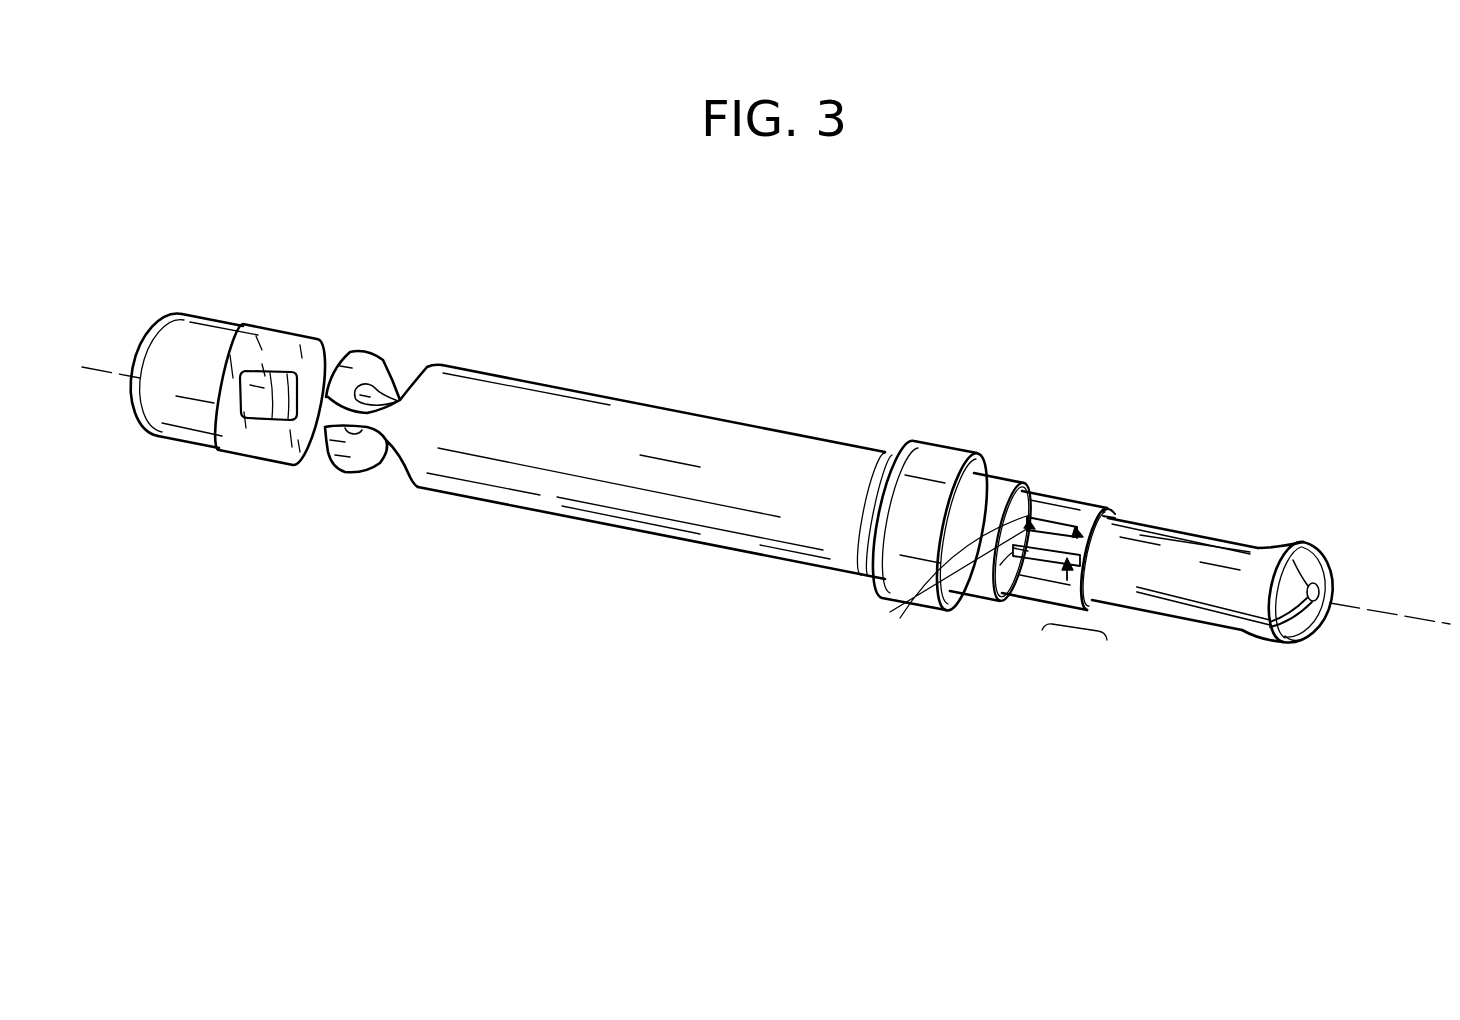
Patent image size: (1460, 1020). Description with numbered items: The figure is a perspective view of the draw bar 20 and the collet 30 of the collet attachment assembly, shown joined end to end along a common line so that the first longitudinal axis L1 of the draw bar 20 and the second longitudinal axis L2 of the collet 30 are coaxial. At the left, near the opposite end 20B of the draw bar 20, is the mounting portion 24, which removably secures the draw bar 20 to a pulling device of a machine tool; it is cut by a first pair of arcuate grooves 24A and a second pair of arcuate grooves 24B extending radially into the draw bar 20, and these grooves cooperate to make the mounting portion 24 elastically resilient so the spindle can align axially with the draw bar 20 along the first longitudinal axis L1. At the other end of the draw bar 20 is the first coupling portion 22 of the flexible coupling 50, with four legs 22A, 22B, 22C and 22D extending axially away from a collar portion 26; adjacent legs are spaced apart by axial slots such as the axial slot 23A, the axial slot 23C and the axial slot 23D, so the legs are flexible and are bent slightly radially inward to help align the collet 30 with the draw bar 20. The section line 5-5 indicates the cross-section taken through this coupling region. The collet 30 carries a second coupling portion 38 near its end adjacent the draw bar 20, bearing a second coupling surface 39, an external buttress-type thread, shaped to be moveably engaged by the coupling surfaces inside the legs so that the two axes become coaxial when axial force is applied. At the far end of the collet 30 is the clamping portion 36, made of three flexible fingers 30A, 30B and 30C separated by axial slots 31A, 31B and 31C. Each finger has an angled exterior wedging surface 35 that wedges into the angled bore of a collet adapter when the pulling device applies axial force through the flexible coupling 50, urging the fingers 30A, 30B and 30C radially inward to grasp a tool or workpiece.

The draw bar 20 is at (555, 400).
The opposite end of the draw bar 20B is at (150, 312).
The first longitudinal axis L1 is at (122, 383).
The mounting portion 24 is at (456, 352).
The first pair of arcuate grooves 24A is at (258, 440).
The second pair of arcuate grooves 24B is at (408, 367).
The collar portion 26 is at (993, 493).
The first coupling portion 22 is at (1054, 448).
The leg 22A is at (1067, 490).
The leg 22B is at (1108, 517).
The leg 22C is at (1100, 597).
The leg 22D is at (1050, 582).
The axial slot 23A is at (1095, 510).
The axial slot 23C is at (1095, 600).
The axial slot 23D is at (1048, 515).
The second coupling portion 38 is at (1070, 578).
The second coupling surface 39 is at (1013, 552).
The flexible coupling 50 is at (1071, 643).
The section line 5-5 is at (940, 574).
The collet 30 is at (1198, 638).
The flexible finger 30A is at (1300, 650).
The flexible finger 30B is at (1325, 565).
The flexible finger 30C is at (1297, 562).
The axial slot 31A is at (1320, 594).
The axial slot 31B is at (1300, 565).
The axial slot 31C is at (1182, 590).
The angled exterior wedging surface 35 is at (1263, 560).
The clamping portion 36 is at (1235, 640).
The second longitudinal axis L2 is at (1397, 613).